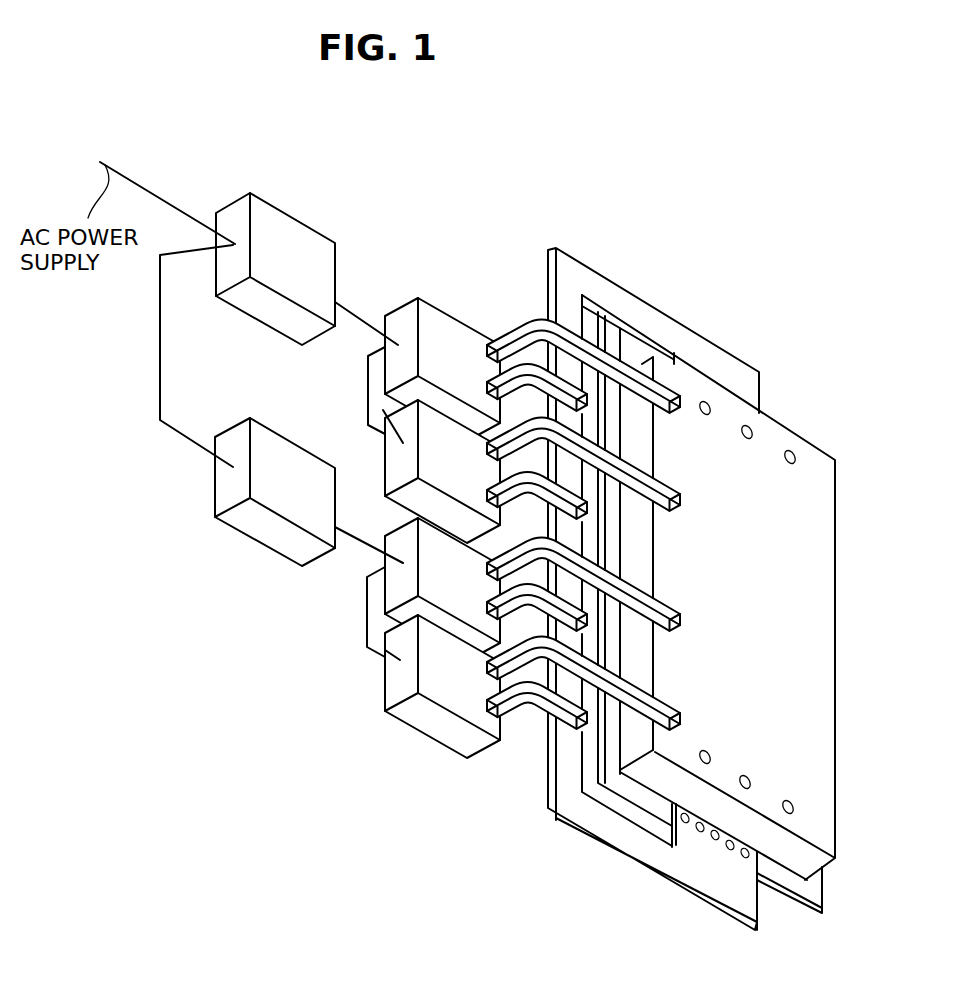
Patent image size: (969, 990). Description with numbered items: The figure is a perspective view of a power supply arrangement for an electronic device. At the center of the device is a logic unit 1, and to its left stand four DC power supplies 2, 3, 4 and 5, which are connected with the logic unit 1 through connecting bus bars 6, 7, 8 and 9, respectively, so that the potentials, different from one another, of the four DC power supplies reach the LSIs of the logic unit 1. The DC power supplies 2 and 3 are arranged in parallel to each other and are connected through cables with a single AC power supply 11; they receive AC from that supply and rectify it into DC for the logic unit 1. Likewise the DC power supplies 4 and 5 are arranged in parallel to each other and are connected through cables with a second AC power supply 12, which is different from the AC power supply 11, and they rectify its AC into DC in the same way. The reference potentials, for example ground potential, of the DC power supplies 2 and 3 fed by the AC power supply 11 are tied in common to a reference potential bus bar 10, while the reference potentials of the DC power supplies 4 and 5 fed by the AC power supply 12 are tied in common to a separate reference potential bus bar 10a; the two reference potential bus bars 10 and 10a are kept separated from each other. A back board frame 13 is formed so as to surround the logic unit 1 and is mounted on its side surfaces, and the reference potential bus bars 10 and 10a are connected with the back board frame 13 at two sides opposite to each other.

The logic unit 1 is at (772, 438).
The DC power supply 2 is at (438, 320).
The DC power supply 3 is at (438, 456).
The DC power supply 4 is at (435, 577).
The DC power supply 5 is at (435, 669).
The connecting bus bar 6 is at (520, 330).
The connecting bus bar 7 is at (613, 453).
The connecting bus bar 8 is at (548, 543).
The connecting bus bar 9 is at (572, 655).
The reference potential bus bar 10 is at (717, 357).
The reference potential bus bar 10a is at (737, 893).
The AC power supply 11 is at (285, 220).
The AC power supply 12 is at (290, 453).
The back board frame 13 is at (807, 890).